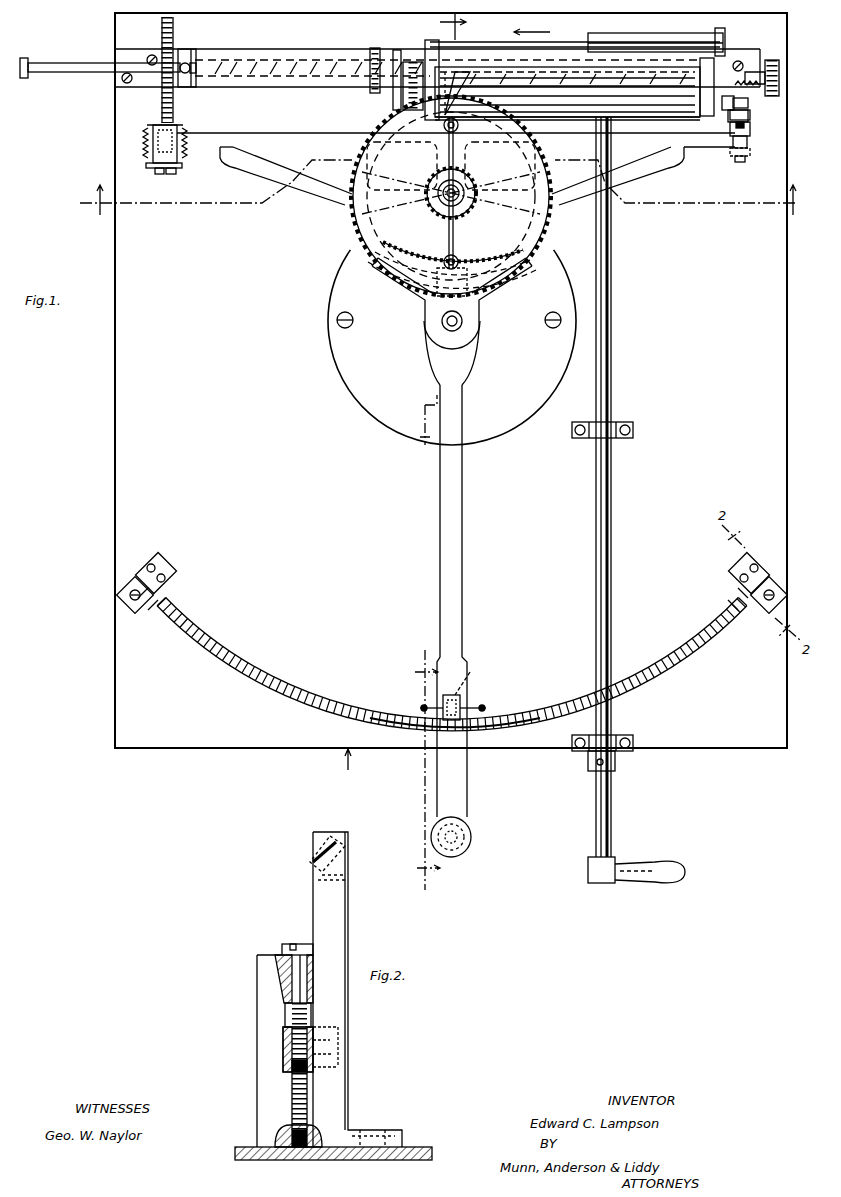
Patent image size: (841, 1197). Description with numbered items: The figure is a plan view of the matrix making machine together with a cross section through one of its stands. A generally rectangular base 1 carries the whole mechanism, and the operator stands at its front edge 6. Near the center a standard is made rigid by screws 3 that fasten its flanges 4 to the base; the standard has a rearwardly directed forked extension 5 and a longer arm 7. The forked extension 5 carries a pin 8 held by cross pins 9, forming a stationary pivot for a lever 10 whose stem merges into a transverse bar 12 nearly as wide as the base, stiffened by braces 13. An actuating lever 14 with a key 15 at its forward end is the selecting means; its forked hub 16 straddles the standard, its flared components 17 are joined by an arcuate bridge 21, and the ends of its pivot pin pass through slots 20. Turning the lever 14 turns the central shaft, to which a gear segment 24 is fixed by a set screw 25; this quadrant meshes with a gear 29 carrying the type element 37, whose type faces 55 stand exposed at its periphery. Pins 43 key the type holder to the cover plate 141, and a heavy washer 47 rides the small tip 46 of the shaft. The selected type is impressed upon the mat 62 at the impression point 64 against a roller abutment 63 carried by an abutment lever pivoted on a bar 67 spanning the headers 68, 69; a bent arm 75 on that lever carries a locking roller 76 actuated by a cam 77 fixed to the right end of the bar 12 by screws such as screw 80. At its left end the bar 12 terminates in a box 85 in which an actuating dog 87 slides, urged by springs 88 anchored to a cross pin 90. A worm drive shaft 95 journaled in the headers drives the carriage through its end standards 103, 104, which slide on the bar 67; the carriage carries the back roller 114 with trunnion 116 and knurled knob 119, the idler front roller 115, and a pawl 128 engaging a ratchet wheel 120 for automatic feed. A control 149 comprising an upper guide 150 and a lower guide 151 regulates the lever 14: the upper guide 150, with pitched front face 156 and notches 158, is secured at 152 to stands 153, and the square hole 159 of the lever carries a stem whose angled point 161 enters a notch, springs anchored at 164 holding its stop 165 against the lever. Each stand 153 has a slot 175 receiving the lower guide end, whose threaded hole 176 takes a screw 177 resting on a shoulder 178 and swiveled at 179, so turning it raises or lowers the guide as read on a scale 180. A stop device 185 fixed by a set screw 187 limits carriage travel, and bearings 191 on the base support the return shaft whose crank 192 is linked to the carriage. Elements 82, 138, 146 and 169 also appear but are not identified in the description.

In FIG. 1, the base 1 is at (126, 390).
In FIG. 1, the screws 3 is at (337, 318).
In FIG. 1, the standard flanges 4 is at (332, 358).
In FIG. 1, the forked extension 5 is at (480, 255).
In FIG. 1, the front edge 6 is at (347, 767).
In FIG. 2, the front edge 6 is at (336, 1026).
In FIG. 1, the arm 7 is at (434, 193).
In FIG. 1, the pin 8 is at (502, 306).
In FIG. 2, the pin 8 is at (336, 1039).
In FIG. 1, the cross pins 9 is at (436, 276).
In FIG. 1, the lever 10 is at (410, 336).
In FIG. 2, the lever 10 is at (340, 1053).
In FIG. 1, the transverse bar 12 is at (255, 133).
In FIG. 2, the transverse bar 12 is at (340, 1066).
In FIG. 1, the braces 13 is at (316, 186).
In FIG. 1, the actuating lever 14 is at (440, 506).
In FIG. 1, the key 15 is at (471, 838).
In FIG. 1, the hub 16 is at (476, 345).
In FIG. 1, the components of the forked hub 17 is at (390, 283).
In FIG. 1, the slots 20 is at (450, 349).
In FIG. 1, the arcuate bridge 21 is at (502, 238).
In FIG. 1, the gear segment 24 is at (408, 236).
In FIG. 1, the set screw 25 is at (440, 328).
In FIG. 1, the gear 29 is at (430, 180).
In FIG. 1, the type element 37 is at (387, 144).
In FIG. 1, the pins 43 is at (458, 125).
In FIG. 1, the tip 46 is at (437, 191).
In FIG. 1, the washer 47 is at (468, 190).
In FIG. 1, the type faces 55 is at (352, 212).
In FIG. 1, the mat 62 is at (540, 92).
In FIG. 1, the roller abutment 63 is at (480, 42).
In FIG. 1, the impression point 64 is at (444, 125).
In FIG. 1, the bar 67 is at (258, 58).
In FIG. 1, the left header 68 is at (188, 48).
In FIG. 1, the right header 69 is at (150, 126).
In FIG. 1, the bent arm 75 is at (749, 104).
In FIG. 1, the locking roller 76 is at (751, 116).
In FIG. 1, the cam 77 is at (748, 142).
In FIG. 1, the screw 80 is at (746, 158).
In FIG. 1, the pawl 82 is at (751, 128).
In FIG. 1, the box 85 is at (152, 139).
In FIG. 1, the actuating dog 87 is at (170, 172).
In FIG. 1, the springs 88 is at (147, 157).
In FIG. 1, the cross pin 90 is at (157, 172).
In FIG. 1, the worm drive shaft 95 is at (161, 34).
In FIG. 1, the end standard 103 is at (425, 52).
In FIG. 1, the end standard 104 is at (712, 64).
In FIG. 1, the back roller 114 is at (548, 75).
In FIG. 1, the front roller 115 is at (552, 120).
In FIG. 1, the trunnion 116 is at (410, 64).
In FIG. 1, the knurled knob 119 is at (780, 78).
In FIG. 1, the ratchet wheel 120 is at (722, 104).
In FIG. 1, the pawl 128 is at (722, 128).
In FIG. 1, the tube 138 is at (654, 92).
In FIG. 1, the cover plate 141 is at (428, 44).
In FIG. 1, the pawl 146 is at (452, 78).
In FIG. 1, the control 149 is at (452, 664).
In FIG. 1, the upper guide 150 is at (352, 716).
In FIG. 2, the upper guide 150 is at (320, 880).
In FIG. 2, the lower guide 151 is at (284, 1064).
In FIG. 1, the securing points 152 is at (124, 588).
In FIG. 2, the securing points 152 is at (310, 871).
In FIG. 1, the stands 153 is at (168, 584).
In FIG. 2, the stands 153 is at (348, 920).
In FIG. 1, the front face 156 is at (318, 708).
In FIG. 2, the front face 156 is at (322, 854).
In FIG. 1, the notches 158 is at (371, 710).
In FIG. 1, the square hole 159 is at (470, 673).
In FIG. 1, the angled point 161 is at (478, 710).
In FIG. 1, the spring anchorage 164 is at (422, 706).
In FIG. 1, the stop 165 is at (462, 700).
In FIG. 1, the handle 169 is at (653, 860).
In FIG. 2, the slot 175 is at (286, 1018).
In FIG. 2, the threaded hole 176 is at (284, 1048).
In FIG. 1, the screw 177 is at (132, 606).
In FIG. 2, the screw 177 is at (290, 980).
In FIG. 2, the shoulder 178 is at (270, 956).
In FIG. 2, the swivel 179 is at (280, 1130).
In FIG. 1, the scale 180 is at (611, 585).
In FIG. 2, the scale 180 is at (339, 1052).
In FIG. 1, the stop device 185 is at (78, 58).
In FIG. 1, the set screw 187 is at (190, 65).
In FIG. 1, the bearings 191 is at (624, 426).
In FIG. 1, the crank 192 is at (658, 38).